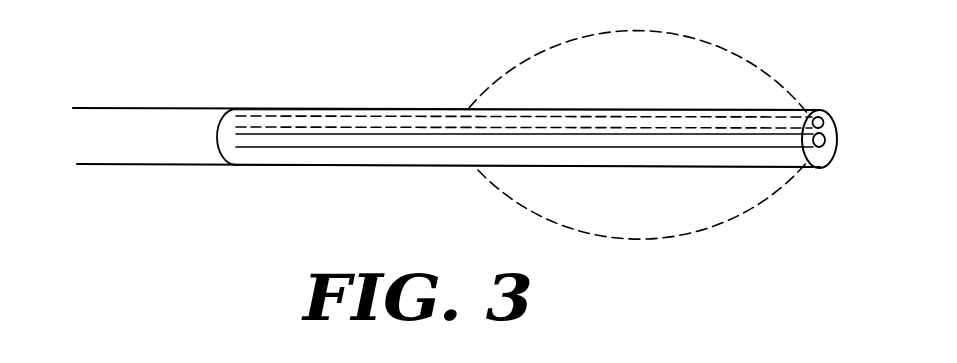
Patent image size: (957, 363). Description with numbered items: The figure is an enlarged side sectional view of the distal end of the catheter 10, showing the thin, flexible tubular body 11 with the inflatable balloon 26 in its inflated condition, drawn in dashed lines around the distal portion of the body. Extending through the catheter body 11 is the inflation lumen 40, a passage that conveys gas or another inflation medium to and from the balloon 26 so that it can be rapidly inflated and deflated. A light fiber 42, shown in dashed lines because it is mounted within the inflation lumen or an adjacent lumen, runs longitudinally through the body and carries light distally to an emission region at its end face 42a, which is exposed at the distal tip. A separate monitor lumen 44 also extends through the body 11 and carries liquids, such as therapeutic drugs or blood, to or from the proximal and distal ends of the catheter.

The catheter 10 is at (335, 100).
The tubular body 11 is at (361, 110).
The inflatable balloon 26 is at (704, 44).
The inflation lumen 40 is at (400, 157).
The light fiber 42 is at (408, 117).
The end face 42a is at (822, 110).
The monitor lumen 44 is at (425, 140).